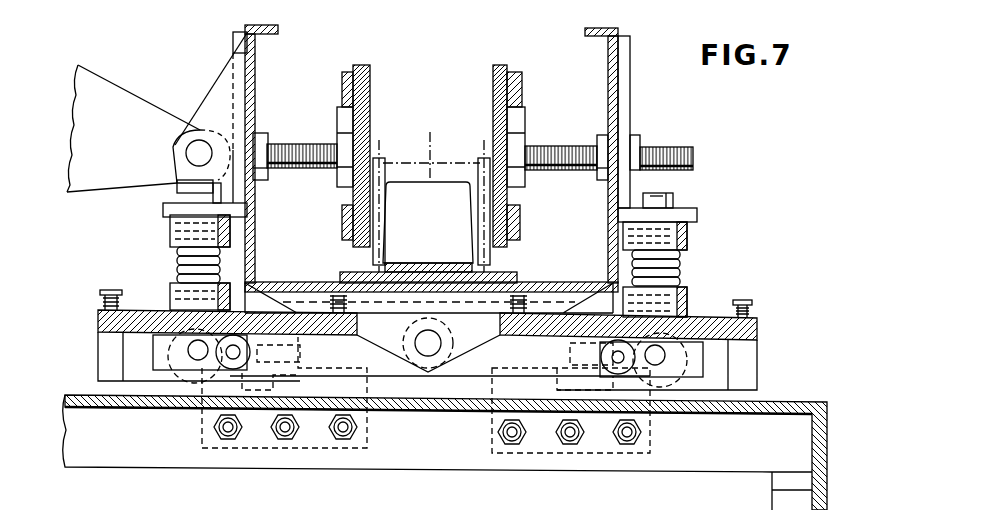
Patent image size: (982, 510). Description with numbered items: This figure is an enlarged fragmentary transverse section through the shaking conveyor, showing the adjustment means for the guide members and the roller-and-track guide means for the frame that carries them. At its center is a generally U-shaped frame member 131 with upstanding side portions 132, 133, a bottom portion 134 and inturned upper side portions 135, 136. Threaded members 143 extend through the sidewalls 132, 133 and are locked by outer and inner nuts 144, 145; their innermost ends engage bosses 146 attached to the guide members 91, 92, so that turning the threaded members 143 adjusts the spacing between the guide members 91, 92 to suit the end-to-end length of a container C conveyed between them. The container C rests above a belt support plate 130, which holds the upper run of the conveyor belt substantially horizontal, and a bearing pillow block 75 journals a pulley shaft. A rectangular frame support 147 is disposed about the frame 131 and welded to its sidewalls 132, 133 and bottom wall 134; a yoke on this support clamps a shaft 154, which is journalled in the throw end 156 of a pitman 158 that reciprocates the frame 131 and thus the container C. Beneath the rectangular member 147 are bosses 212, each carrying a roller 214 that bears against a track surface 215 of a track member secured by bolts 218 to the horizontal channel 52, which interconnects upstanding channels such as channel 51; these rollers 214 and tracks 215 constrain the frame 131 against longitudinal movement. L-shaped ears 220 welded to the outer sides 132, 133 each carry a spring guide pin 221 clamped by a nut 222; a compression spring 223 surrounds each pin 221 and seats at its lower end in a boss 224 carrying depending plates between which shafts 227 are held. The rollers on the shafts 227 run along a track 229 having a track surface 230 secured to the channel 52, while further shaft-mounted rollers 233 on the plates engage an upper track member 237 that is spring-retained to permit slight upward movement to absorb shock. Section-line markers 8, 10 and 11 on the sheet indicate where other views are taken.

The section line 8- 8 is at (143, 55).
The section line 10- 10 is at (430, 167).
The section line 11- 11 is at (115, 285).
The upstanding channel 51 is at (777, 490).
The channel-type supporting member 52 is at (680, 443).
The bearing pillow block 75 is at (418, 262).
The guide member 91 is at (357, 57).
The guide member 92 is at (498, 57).
The belt support plate 130 is at (503, 270).
The U-shaped frame member 131 is at (622, 74).
The upstanding side portion 132 is at (621, 100).
The upstanding side portion 133 is at (257, 50).
The bottom portion 134 is at (530, 283).
The inturned upper side portion 135 is at (593, 27).
The inturned upper side portion 136 is at (267, 23).
The threaded member 143 is at (313, 125).
The nut 144 is at (637, 134).
The nut 145 is at (260, 178).
The boss 146 is at (342, 110).
The rectangular frame support 147 is at (308, 506).
The shaft 154 is at (186, 152).
The throw end 156 is at (213, 128).
The pitman 158 is at (106, 80).
The boss 212 is at (308, 283).
The roller 214 is at (309, 350).
The track surface 215 is at (368, 418).
The bolt 218 is at (214, 427).
The L-shaped ear 220 is at (163, 208).
The spring guide pin 221 is at (672, 195).
The nut 222 is at (674, 200).
The compression spring 223 is at (173, 250).
The boss 224 is at (173, 293).
The shaft 227 is at (364, 371).
The track 229 is at (755, 388).
The track surface 230 is at (738, 380).
The roller 233 is at (683, 248).
The upper track member 237 is at (98, 320).
The container C is at (390, 157).